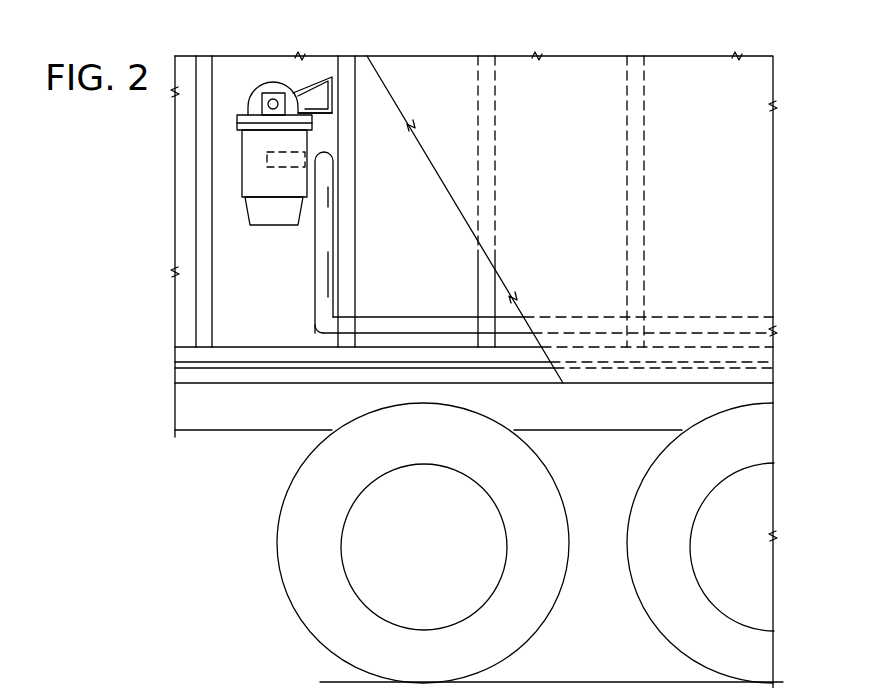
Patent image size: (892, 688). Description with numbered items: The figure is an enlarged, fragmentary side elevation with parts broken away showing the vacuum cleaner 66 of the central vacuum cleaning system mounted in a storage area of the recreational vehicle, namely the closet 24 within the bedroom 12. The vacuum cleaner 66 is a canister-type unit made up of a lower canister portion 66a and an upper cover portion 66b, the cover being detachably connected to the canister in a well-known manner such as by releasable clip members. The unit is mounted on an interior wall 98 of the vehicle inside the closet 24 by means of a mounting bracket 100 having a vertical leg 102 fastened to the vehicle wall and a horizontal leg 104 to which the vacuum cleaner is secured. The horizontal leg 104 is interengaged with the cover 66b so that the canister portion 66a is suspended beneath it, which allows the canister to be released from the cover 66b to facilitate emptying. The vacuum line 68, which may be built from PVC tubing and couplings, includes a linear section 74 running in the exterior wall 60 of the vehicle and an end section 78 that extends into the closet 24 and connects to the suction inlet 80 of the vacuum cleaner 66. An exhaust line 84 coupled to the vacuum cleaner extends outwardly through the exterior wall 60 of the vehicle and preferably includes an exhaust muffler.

The bedroom 12 is at (245, 320).
The closet 24 is at (235, 279).
The exterior wall 60 is at (742, 163).
The vacuum cleaner 66 is at (205, 145).
The lower canister portion 66a is at (248, 210).
The upper cover portion 66b is at (262, 82).
The vacuum line 68 is at (422, 317).
The linear section 74 is at (682, 320).
The end section 78 is at (327, 268).
The suction inlet 80 is at (262, 165).
The exhaust line 84 is at (258, 105).
The interior wall 98 is at (350, 218).
The mounting bracket 100 is at (339, 99).
The vertical leg 102 is at (295, 91).
The horizontal leg 104 is at (323, 113).